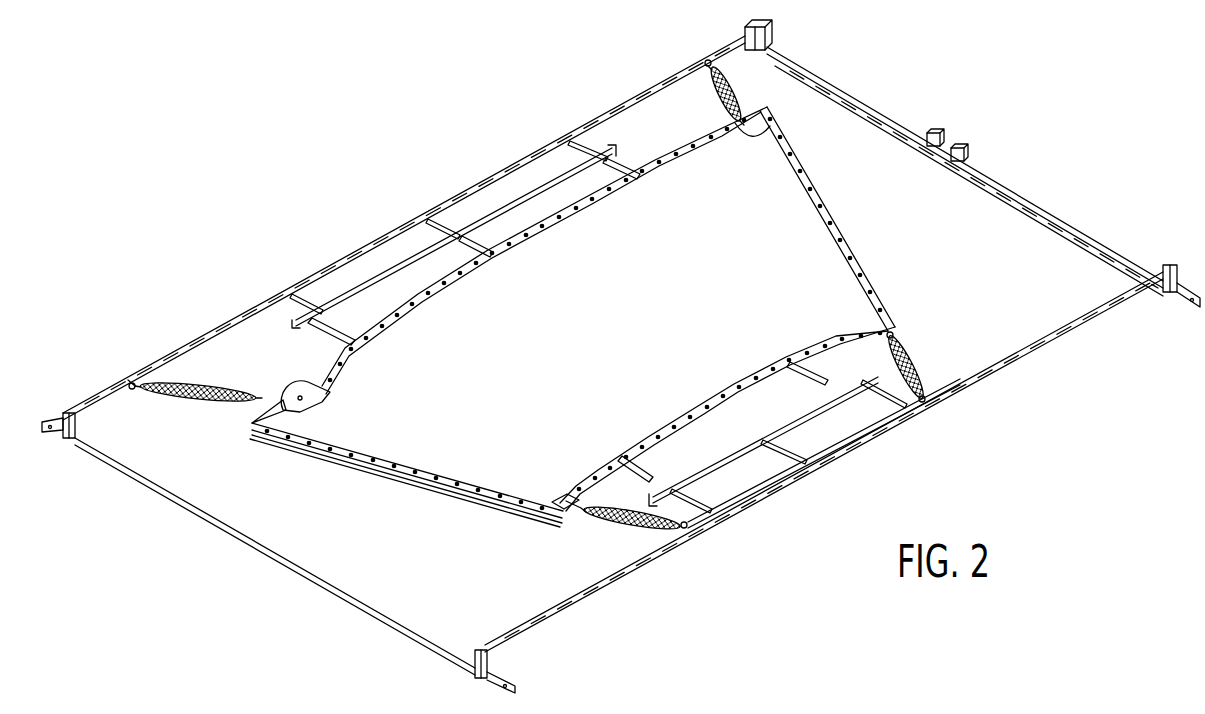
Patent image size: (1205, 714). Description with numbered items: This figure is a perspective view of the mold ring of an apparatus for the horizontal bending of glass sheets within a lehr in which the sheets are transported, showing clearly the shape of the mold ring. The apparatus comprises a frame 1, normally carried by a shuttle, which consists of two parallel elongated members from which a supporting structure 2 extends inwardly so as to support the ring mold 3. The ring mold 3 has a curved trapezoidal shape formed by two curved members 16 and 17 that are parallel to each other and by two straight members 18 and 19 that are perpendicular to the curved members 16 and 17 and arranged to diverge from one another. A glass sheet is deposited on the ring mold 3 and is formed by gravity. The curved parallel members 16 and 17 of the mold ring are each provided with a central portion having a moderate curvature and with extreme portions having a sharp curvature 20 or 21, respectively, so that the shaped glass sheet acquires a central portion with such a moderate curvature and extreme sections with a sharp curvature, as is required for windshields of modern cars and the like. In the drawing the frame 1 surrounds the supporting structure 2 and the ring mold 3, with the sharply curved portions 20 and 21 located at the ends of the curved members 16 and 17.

The frame 1 is at (290, 577).
The supporting structure 2 is at (501, 203).
The ring mold 3 is at (418, 494).
The curved member 16 is at (556, 230).
The curved member 17 is at (702, 403).
The straight member 18 is at (438, 466).
The straight member 19 is at (818, 206).
The extreme portion having a sharp curvature 20 is at (735, 128).
The extreme portion having a sharp curvature 21 is at (568, 512).